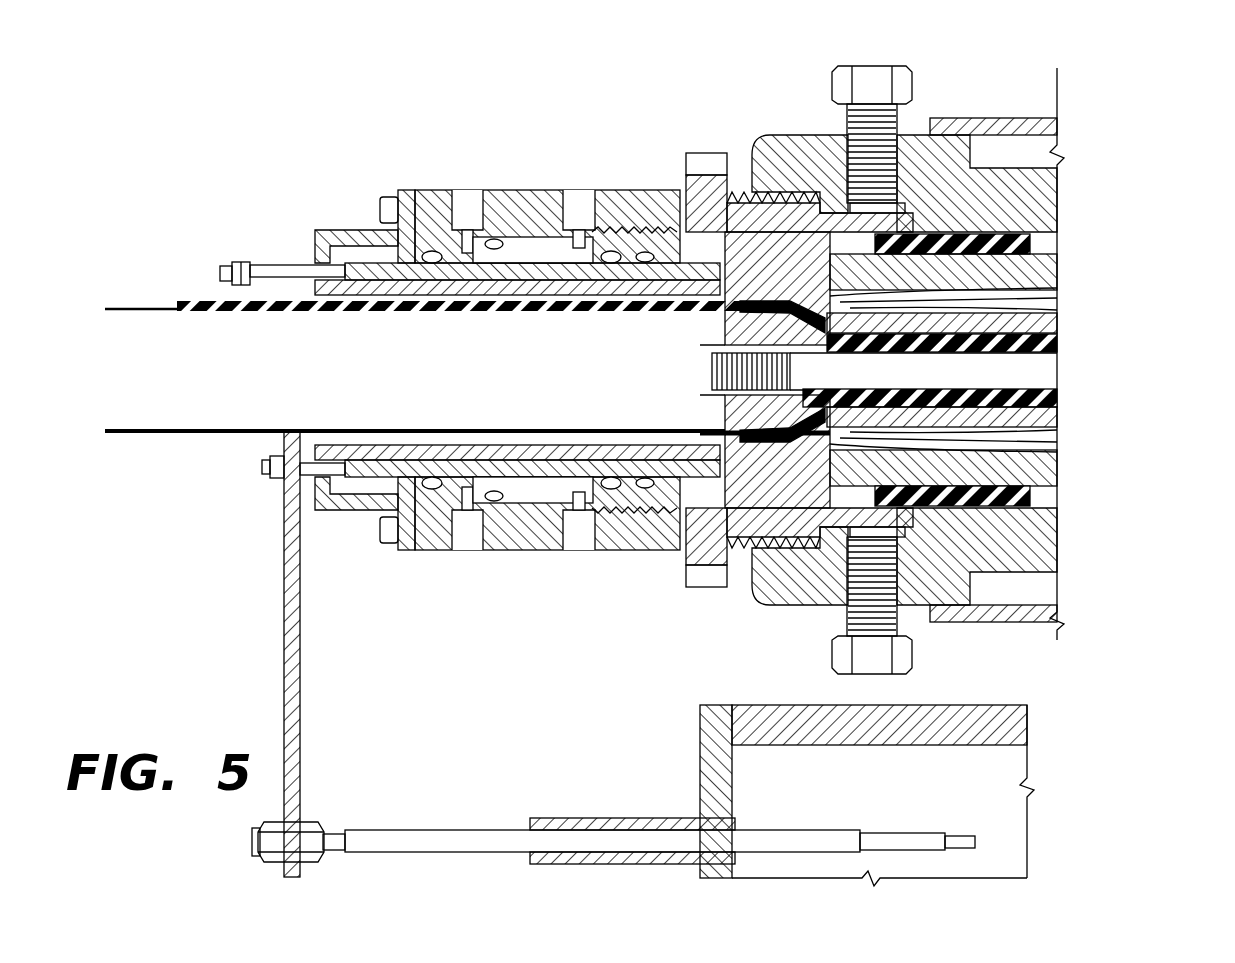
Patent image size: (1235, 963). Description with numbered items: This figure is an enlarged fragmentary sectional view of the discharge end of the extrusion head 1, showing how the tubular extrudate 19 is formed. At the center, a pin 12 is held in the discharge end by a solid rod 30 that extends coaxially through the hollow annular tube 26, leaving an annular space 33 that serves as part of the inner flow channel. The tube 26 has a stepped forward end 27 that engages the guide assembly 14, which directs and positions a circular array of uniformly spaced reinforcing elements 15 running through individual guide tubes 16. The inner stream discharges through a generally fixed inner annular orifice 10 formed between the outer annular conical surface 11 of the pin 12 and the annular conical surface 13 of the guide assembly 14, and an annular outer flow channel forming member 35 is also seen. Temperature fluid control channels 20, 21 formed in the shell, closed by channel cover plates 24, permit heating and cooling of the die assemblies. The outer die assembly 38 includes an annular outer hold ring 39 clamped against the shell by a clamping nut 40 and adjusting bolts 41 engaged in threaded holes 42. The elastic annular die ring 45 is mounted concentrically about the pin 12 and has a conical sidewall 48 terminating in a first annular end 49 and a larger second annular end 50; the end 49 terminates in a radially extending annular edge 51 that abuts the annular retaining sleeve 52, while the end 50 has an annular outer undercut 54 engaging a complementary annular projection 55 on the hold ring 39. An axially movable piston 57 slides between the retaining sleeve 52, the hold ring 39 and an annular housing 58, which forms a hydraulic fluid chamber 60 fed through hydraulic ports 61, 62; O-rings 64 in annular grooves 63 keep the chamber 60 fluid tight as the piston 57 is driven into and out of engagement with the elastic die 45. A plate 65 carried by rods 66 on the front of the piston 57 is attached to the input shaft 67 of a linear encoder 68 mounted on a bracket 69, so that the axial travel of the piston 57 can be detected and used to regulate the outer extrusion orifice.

The extrusion head 1 is at (712, 62).
The inner annular orifice 10 is at (730, 305).
The outer annular conical surface 11 is at (800, 395).
The pin 12 is at (722, 352).
The annular conical surface 13 is at (1000, 295).
The guide assembly 14 is at (1030, 268).
The reinforcing elements 15 is at (1040, 456).
The guide tubes 16 is at (1000, 306).
The tubular extrudate 19 is at (155, 452).
The temperature fluid control channel 20 is at (1025, 182).
The temperature fluid control channel 21 is at (1015, 610).
The channel cover plate 24 is at (1005, 118).
The annular tube 26 is at (1060, 399).
The stepped forward end 27 is at (880, 393).
The solid rod 30 is at (1025, 372).
The annular space 33 is at (1065, 338).
The annular outer flow channel forming member 35 is at (1060, 497).
The outer die assembly 38 is at (586, 323).
The annular outer hold ring 39 is at (690, 190).
The clamping nut 40 is at (668, 578).
The adjusting bolts 41 is at (882, 90).
The threaded holes 42 is at (905, 140).
The elastic annular die ring 45 is at (715, 588).
The conical sidewall 48 is at (675, 445).
The first annular end 49 is at (620, 450).
The second annular end 50 is at (838, 165).
The radially extending annular edge 51 is at (630, 190).
The annular retaining sleeve 52 is at (517, 307).
The annular outer undercut 54 is at (762, 620).
The annular projection 55 is at (765, 152).
The axially movable piston 57 is at (378, 235).
The annular housing 58 is at (555, 552).
The hydraulic fluid chamber 60 is at (450, 552).
The hydraulic port 61 is at (470, 188).
The hydraulic port 62 is at (580, 190).
The annular grooves 63 is at (640, 552).
The O-rings 64 is at (440, 480).
The plate 65 is at (290, 700).
The rods 66 is at (285, 265).
The input shaft 67 is at (435, 830).
The linear encoder 68 is at (950, 797).
The bracket 69 is at (1000, 725).